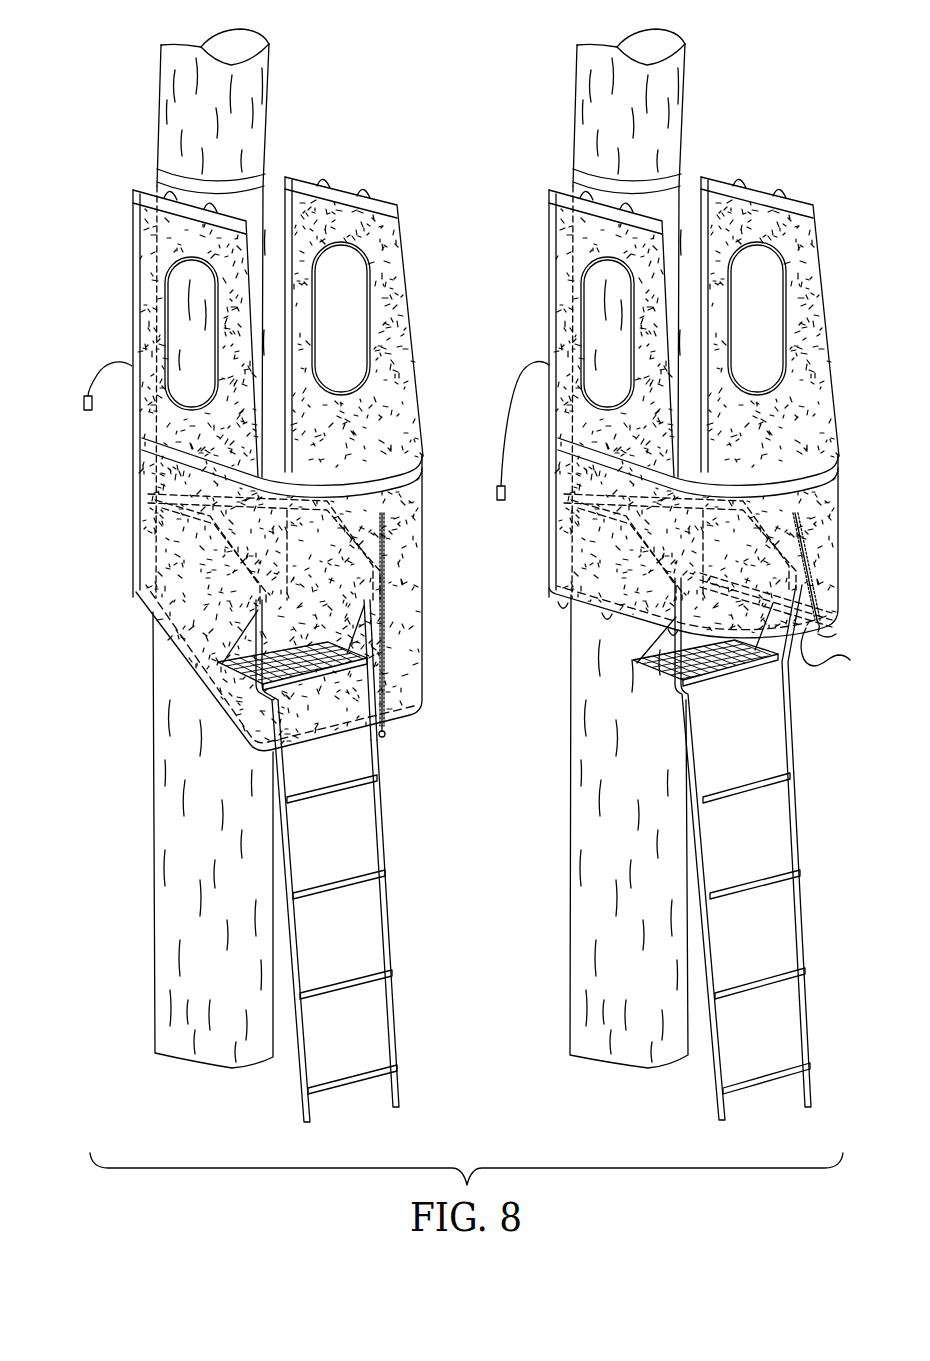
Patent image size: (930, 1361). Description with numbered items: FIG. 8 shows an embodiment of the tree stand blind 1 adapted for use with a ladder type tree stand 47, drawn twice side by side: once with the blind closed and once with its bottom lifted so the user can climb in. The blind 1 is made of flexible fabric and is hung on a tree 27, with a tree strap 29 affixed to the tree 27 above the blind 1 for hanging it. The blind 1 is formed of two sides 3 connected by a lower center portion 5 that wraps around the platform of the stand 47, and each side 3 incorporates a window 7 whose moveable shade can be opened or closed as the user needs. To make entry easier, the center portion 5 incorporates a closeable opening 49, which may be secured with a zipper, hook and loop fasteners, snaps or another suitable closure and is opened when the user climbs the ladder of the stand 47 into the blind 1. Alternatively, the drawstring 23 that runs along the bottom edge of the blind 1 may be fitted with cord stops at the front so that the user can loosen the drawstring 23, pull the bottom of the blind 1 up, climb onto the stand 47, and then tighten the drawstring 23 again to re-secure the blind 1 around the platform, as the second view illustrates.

The tree stand blind 1 is at (120, 280).
The side 3 is at (379, 238).
The lower center portion 5 is at (401, 503).
The window 7 is at (358, 312).
The drawstring 23 is at (832, 658).
The tree 27 is at (160, 90).
The tree strap 29 is at (170, 178).
The ladder type tree stand 47 is at (379, 812).
The closeable opening 49 is at (383, 664).